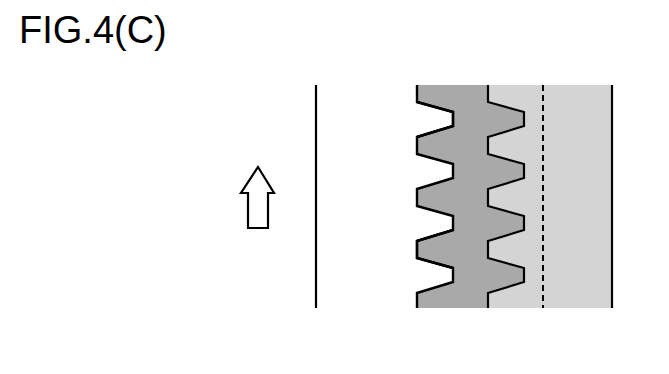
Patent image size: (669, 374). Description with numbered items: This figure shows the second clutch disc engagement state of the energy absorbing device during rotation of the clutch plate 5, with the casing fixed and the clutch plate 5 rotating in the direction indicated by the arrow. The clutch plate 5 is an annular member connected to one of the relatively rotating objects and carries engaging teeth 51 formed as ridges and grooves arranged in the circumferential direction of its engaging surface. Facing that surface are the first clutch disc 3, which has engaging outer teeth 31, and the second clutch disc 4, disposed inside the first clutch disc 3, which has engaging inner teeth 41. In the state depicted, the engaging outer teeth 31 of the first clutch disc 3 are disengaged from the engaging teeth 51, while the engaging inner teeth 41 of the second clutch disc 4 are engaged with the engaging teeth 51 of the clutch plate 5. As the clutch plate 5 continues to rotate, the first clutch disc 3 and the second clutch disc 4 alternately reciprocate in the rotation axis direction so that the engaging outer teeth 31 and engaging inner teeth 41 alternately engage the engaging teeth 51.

The first clutch disc 3 is at (580, 93).
The engaging outer teeth 31 is at (512, 137).
The second clutch disc 4 is at (470, 93).
The engaging inner teeth 41 is at (438, 250).
The clutch plate 5 is at (316, 134).
The engaging teeth 51 is at (433, 116).